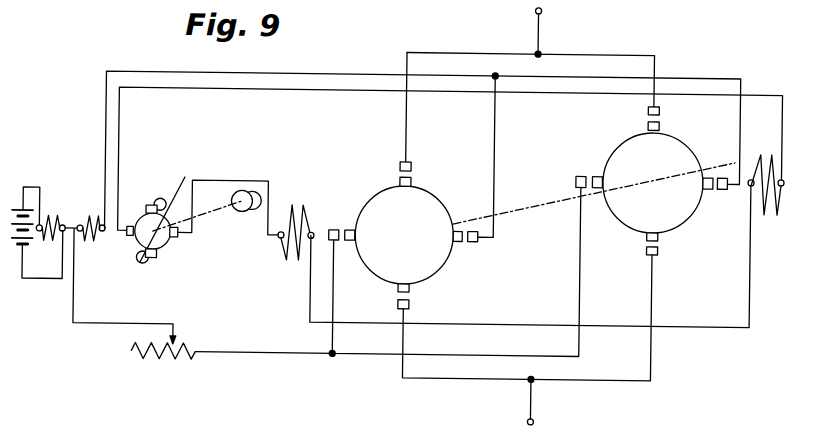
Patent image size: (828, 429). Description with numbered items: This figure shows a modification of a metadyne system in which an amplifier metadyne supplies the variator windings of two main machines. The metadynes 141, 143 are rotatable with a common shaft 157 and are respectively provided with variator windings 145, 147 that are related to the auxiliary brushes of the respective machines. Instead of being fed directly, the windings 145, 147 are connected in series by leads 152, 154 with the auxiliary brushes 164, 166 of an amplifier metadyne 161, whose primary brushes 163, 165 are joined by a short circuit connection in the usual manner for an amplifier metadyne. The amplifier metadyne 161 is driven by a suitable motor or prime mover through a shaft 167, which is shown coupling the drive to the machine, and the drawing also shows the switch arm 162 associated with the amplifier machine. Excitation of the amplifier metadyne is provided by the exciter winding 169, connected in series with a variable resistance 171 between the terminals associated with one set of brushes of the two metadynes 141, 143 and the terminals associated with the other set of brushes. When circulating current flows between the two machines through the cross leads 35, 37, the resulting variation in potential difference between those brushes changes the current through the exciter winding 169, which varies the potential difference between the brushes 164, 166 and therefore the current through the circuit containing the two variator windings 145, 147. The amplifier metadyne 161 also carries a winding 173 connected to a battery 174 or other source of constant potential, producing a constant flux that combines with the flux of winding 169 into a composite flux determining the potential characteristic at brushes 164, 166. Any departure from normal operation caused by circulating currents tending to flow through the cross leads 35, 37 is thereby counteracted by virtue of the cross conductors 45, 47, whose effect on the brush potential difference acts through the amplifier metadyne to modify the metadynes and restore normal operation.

The cross lead 35 is at (468, 52).
The cross lead 37 is at (622, 366).
The cross conductor 45 is at (600, 71).
The cross conductor 47 is at (488, 354).
The metadyne 141 is at (430, 194).
The metadyne 143 is at (618, 140).
The variator winding 145 is at (290, 206).
The variator winding 147 is at (757, 210).
The lead 152 is at (512, 311).
The lead 154 is at (212, 91).
The shaft 157 is at (513, 209).
The amplifier metadyne 161 is at (166, 223).
The switch arm 162 is at (179, 209).
The primary brush 163 is at (157, 193).
The auxiliary brush 164 is at (178, 238).
The primary brush 165 is at (157, 270).
The auxiliary brush 166 is at (138, 246).
The shaft 167 is at (217, 217).
The exciter winding 169 is at (93, 218).
The variable resistance 171 is at (163, 363).
The winding 173 is at (50, 213).
The battery 174 is at (12, 215).